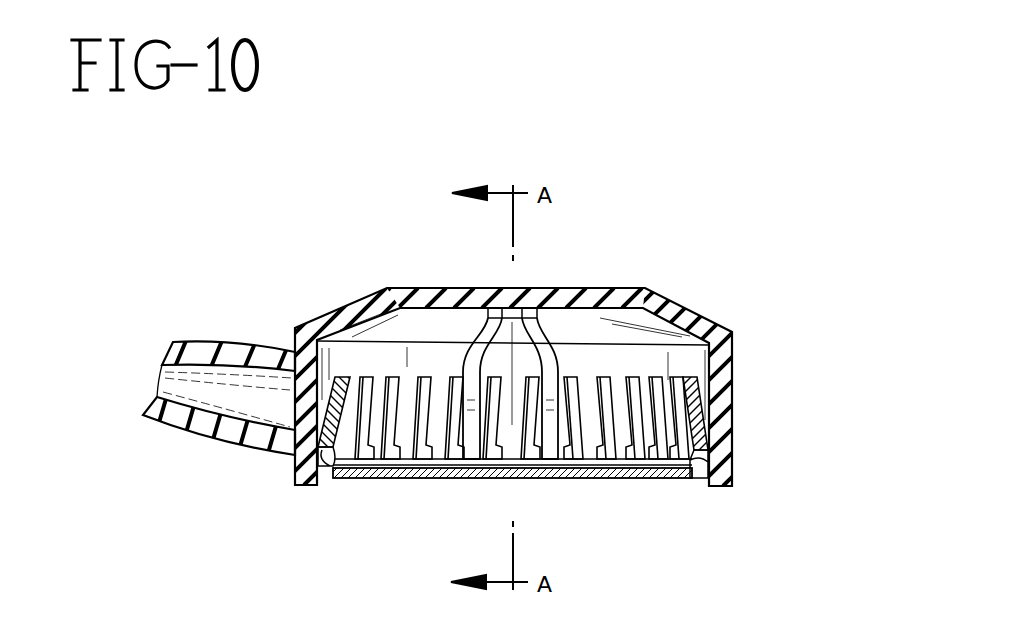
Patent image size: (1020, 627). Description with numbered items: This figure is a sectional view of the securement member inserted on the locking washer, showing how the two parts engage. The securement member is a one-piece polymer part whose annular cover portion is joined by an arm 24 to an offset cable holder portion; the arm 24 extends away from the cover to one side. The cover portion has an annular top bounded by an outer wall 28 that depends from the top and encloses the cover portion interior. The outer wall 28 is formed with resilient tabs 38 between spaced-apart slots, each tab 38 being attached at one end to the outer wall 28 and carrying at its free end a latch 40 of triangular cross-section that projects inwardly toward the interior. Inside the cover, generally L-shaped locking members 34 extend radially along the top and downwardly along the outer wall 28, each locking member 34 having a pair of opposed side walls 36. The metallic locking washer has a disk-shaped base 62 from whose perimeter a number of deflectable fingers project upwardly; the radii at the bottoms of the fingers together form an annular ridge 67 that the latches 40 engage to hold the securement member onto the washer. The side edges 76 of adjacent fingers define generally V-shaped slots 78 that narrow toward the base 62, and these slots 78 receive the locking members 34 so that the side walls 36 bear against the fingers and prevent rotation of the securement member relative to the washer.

The arm 24 is at (230, 345).
The outer wall 28 is at (720, 370).
The locking member 34 is at (438, 304).
The side wall 36 is at (557, 328).
The resilient tab 38 is at (722, 444).
The latch 40 is at (697, 483).
The base 62 is at (383, 479).
The annular ridge 67 is at (322, 480).
The side edge 76 is at (402, 377).
The V-shaped slot 78 is at (612, 378).